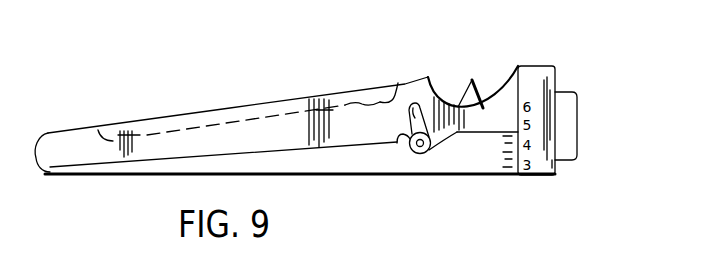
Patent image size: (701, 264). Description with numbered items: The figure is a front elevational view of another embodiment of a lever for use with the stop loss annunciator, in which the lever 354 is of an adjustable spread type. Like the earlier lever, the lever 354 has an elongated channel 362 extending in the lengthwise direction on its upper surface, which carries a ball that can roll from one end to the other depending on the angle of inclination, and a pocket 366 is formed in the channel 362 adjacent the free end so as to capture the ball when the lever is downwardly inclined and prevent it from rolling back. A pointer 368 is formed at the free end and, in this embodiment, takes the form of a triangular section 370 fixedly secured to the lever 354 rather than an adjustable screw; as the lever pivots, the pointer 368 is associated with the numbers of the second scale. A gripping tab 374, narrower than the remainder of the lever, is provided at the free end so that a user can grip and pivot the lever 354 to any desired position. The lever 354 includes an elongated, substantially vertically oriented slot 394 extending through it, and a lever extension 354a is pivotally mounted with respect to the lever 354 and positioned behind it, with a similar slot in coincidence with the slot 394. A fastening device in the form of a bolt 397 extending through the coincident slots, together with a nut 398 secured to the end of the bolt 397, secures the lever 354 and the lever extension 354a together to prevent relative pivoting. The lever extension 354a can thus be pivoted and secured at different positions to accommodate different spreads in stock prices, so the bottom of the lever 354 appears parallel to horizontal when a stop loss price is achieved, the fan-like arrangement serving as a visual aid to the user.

The lever 354 is at (180, 143).
The lever extension 354a is at (343, 165).
The channel 362 is at (277, 113).
The pocket 366 is at (388, 100).
The pointer 368 is at (482, 78).
The triangular section 370 is at (473, 109).
The gripping tab 374 is at (566, 138).
The slot 394 is at (414, 106).
The bolt 397 is at (421, 155).
The nut 398 is at (397, 146).